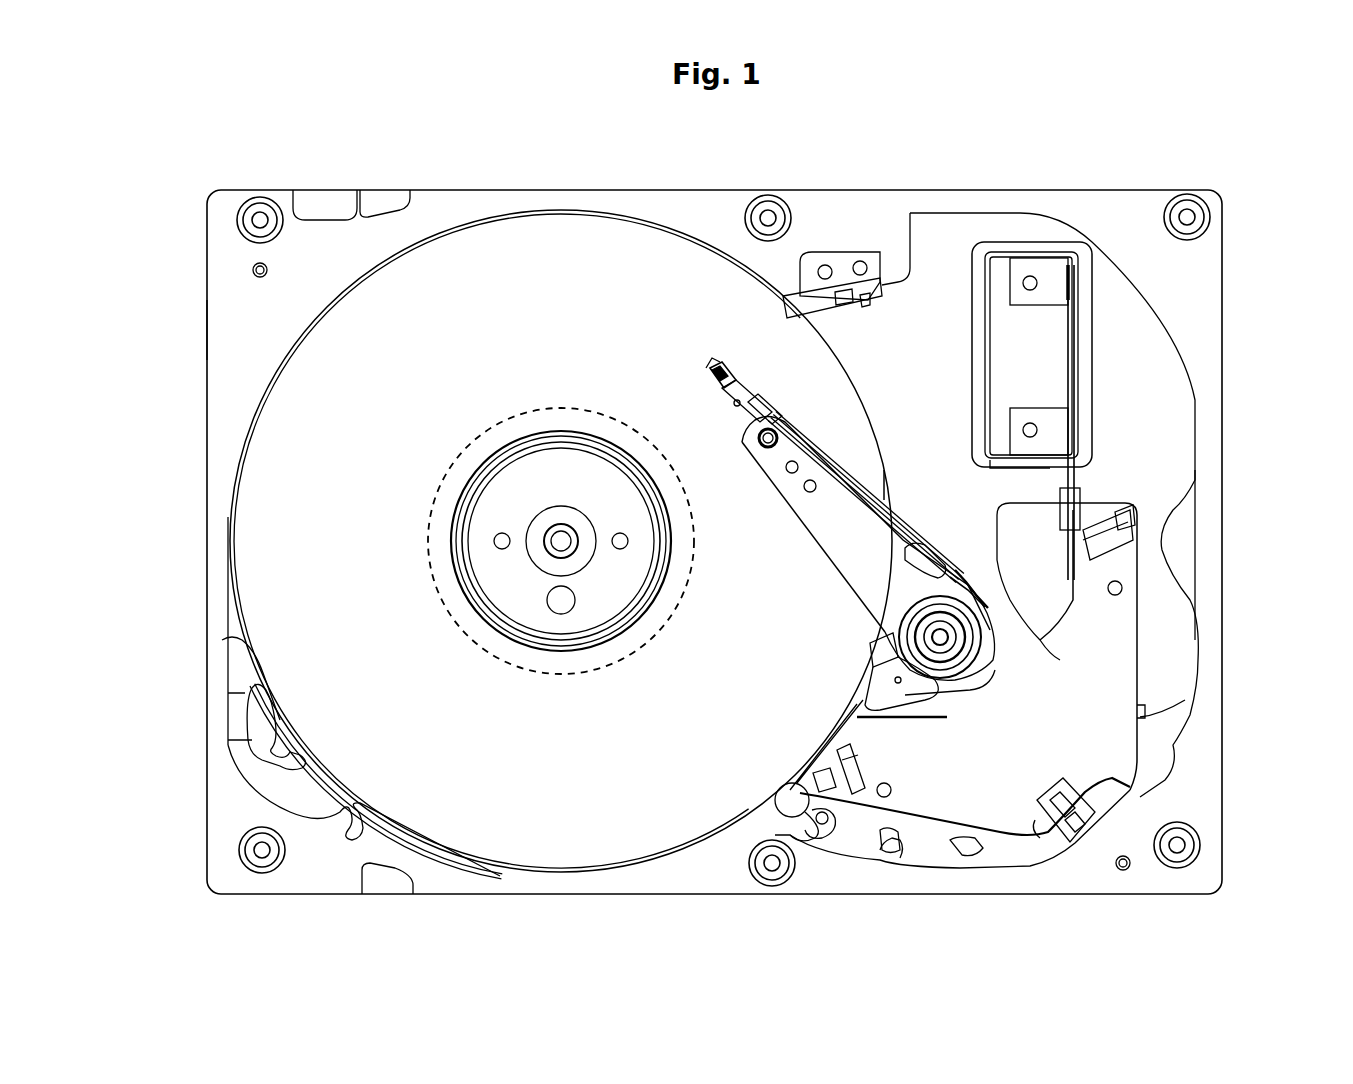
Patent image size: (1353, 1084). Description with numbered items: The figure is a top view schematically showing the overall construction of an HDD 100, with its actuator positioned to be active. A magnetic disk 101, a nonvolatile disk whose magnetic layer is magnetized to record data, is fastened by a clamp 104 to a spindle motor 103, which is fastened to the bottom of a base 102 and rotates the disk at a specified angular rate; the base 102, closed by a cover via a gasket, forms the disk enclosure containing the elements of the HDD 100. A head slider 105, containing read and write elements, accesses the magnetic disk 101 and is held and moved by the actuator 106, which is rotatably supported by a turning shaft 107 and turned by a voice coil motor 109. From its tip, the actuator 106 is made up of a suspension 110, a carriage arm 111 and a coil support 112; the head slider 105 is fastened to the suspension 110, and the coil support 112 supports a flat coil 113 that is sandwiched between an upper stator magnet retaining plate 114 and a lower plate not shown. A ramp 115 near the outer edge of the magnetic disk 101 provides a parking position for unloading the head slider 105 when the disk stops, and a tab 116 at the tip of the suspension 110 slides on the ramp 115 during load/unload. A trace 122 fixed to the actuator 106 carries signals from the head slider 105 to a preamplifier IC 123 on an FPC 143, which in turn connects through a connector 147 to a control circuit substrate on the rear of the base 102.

The HDD 100 is at (985, 145).
The magnetic disk 101 is at (222, 640).
The base 102 is at (207, 332).
The spindle motor 103 is at (575, 675).
The clamp 104 is at (560, 432).
The head slider 105 is at (712, 381).
The actuator 106 is at (897, 504).
The turning shaft 107 is at (853, 686).
The voice coil motor 109 is at (1152, 649).
The suspension 110 is at (745, 422).
The carriage arm 111 is at (795, 524).
The coil support 112 is at (1198, 686).
The flat coil 113 is at (990, 700).
The upper stator magnet retaining plate 114 is at (923, 822).
The ramp 115 is at (843, 310).
The tab 116 is at (712, 366).
The trace 122 is at (826, 458).
The preamplifier IC 123 is at (963, 560).
The FPC 143 is at (1008, 505).
The connector 147 is at (972, 290).